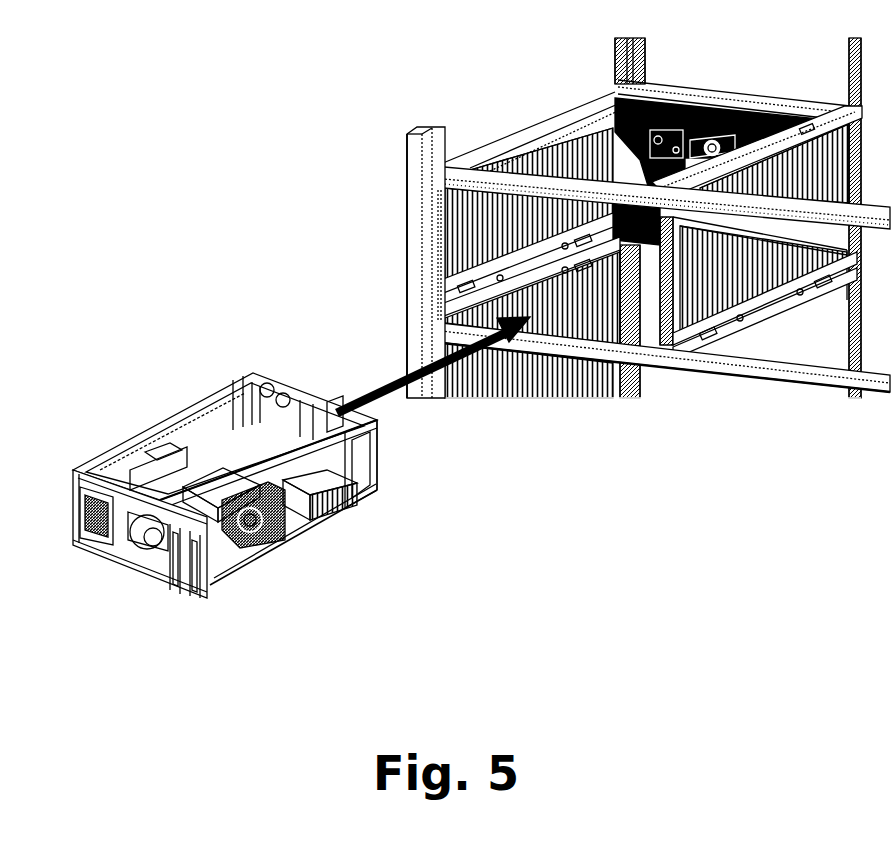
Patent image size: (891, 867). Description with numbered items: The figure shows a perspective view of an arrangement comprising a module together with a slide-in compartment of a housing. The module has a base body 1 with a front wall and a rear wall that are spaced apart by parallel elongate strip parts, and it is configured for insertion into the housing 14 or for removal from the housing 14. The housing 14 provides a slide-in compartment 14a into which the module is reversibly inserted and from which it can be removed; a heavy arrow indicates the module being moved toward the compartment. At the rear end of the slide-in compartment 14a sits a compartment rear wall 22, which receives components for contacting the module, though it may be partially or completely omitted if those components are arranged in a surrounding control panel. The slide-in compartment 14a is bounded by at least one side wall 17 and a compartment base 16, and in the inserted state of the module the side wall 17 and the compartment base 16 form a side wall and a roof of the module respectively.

The base body 1 is at (207, 398).
The housing 14 is at (398, 157).
The slide-in compartment 14a is at (436, 228).
The compartment base 16 is at (490, 162).
The side wall 17 is at (440, 255).
The compartment rear wall 22 is at (718, 112).